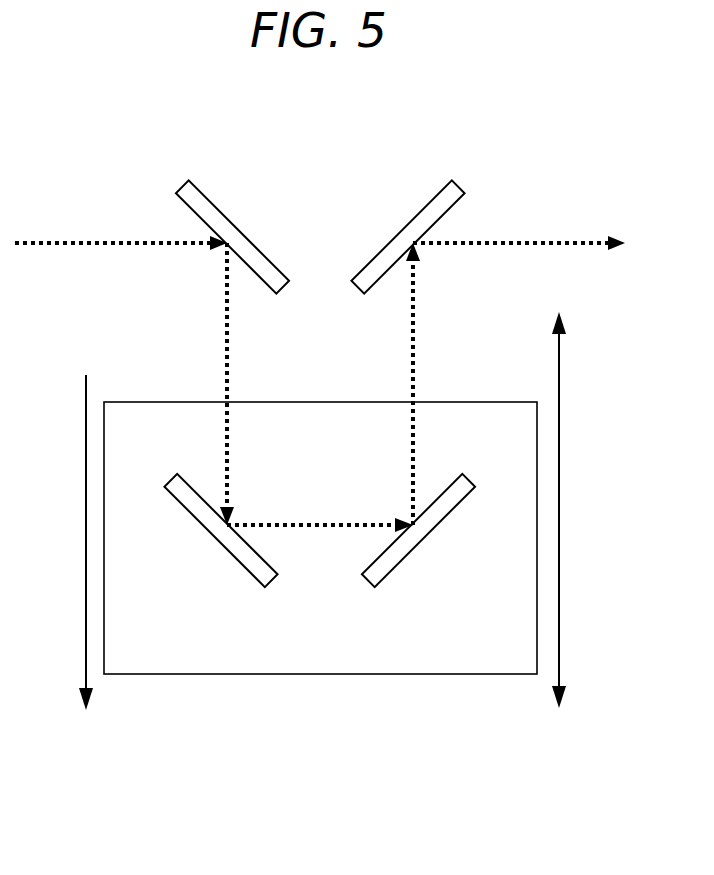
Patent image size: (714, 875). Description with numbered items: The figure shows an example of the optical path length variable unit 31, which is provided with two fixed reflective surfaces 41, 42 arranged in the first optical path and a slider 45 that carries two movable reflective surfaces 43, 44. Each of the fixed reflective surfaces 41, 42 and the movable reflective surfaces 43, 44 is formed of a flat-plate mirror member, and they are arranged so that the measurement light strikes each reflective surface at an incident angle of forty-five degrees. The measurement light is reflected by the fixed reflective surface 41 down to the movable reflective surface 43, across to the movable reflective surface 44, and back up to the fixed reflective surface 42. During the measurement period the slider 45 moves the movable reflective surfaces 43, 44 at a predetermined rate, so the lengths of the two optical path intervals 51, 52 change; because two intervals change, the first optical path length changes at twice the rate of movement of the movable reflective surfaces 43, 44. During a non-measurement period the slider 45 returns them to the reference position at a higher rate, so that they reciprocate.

The optical path length variable unit 31 is at (502, 127).
The fixed reflective surface 41 is at (202, 195).
The fixed reflective surface 42 is at (438, 195).
The movable reflective surface 43 is at (255, 572).
The movable reflective surface 44 is at (387, 572).
The slider 45 is at (510, 410).
The optical path interval 51 is at (225, 360).
The optical path interval 52 is at (416, 360).